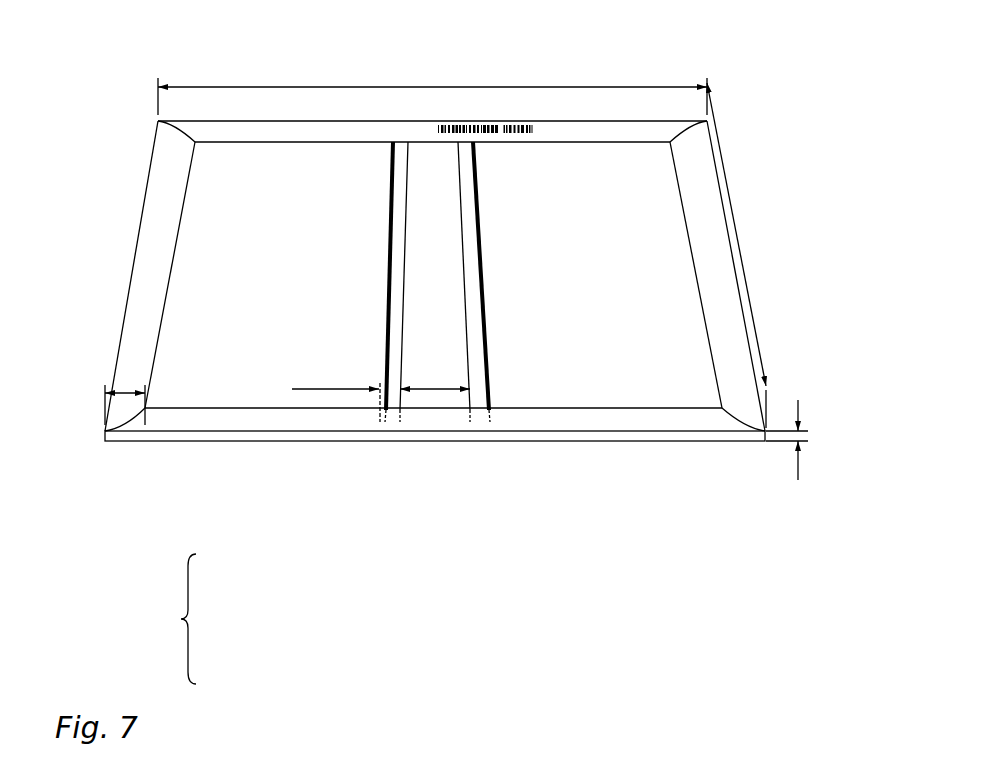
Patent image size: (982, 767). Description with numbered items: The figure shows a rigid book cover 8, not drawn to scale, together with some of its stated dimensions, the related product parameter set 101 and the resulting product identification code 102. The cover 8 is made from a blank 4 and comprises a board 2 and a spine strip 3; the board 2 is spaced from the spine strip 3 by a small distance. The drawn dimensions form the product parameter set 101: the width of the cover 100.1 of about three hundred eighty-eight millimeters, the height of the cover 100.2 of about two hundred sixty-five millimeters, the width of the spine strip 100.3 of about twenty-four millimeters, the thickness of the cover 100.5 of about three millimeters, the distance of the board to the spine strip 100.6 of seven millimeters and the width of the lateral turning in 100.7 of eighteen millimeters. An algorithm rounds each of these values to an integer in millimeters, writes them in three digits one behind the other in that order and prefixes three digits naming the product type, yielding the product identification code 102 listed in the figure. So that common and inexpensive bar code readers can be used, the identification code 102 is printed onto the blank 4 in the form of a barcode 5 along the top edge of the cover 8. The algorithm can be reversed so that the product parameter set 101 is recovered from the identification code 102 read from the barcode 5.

The cover 8 is at (84, 90).
The board 2 is at (246, 397).
The spine strip 3 is at (430, 398).
The blank 4 is at (177, 420).
The barcode 5 is at (505, 106).
The width of the cover 100.1 is at (380, 67).
The height of the cover 100.2 is at (783, 209).
The width of the spine strip 100.3 is at (443, 361).
The thickness of cover 100.5 is at (757, 492).
The distance of board to spine strip 100.6 is at (287, 375).
The width of turning in 100.7 is at (134, 390).
The product parameter set 101 is at (168, 620).
The product identification code 102 is at (632, 613).